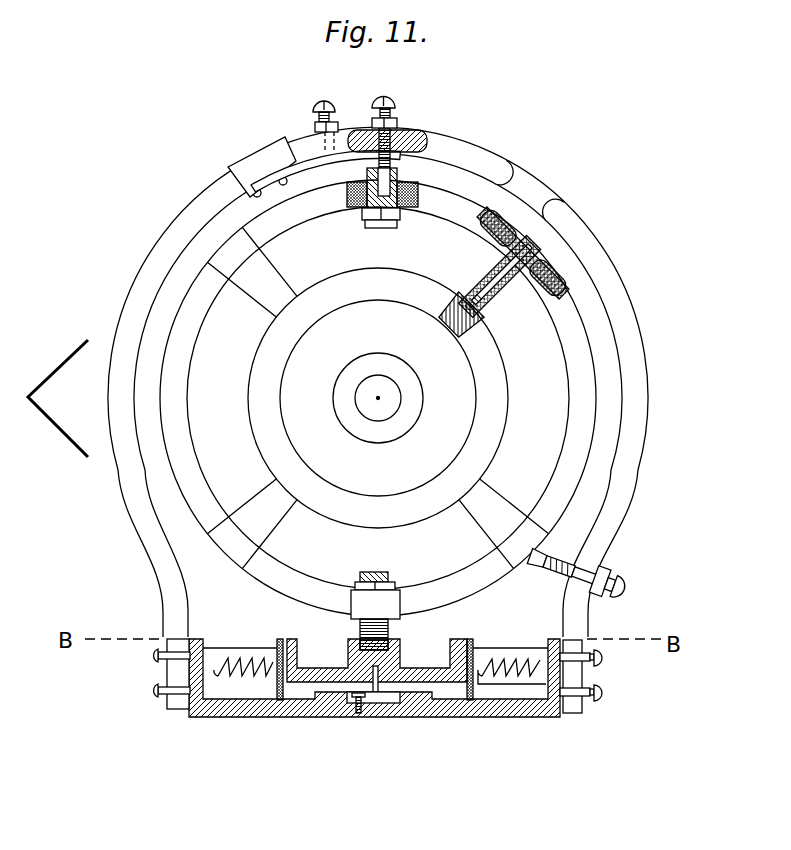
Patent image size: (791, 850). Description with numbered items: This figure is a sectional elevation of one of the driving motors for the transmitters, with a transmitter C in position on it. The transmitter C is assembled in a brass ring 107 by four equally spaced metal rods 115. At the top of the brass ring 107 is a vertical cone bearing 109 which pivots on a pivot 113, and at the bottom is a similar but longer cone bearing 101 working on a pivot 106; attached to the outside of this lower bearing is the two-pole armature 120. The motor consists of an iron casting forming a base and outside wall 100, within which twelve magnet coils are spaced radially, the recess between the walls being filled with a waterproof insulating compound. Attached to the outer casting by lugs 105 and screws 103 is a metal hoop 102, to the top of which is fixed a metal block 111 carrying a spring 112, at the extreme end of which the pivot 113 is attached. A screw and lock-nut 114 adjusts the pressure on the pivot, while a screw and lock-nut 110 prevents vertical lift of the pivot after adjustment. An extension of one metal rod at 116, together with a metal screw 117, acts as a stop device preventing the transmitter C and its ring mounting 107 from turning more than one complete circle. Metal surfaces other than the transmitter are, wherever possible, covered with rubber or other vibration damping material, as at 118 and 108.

The base and outside wall 100 is at (530, 717).
The cone bearing 101 is at (368, 683).
The metal hoop 102 is at (533, 180).
The screws 103 is at (605, 688).
The lugs 105 is at (584, 706).
The pivot 106 is at (376, 690).
The brass ring 107 is at (583, 320).
The vibration damping material 108 is at (556, 298).
The cone bearing 109 is at (397, 171).
The screw and lock-nut 110 is at (387, 96).
The metal block 111 is at (256, 152).
The spring 112 is at (305, 160).
The pivot 113 is at (400, 165).
The screw and lock-nut 114 is at (329, 99).
The metal rods 115 is at (533, 247).
The rod extension 116 is at (536, 558).
The metal screw 117 is at (621, 583).
The vibration damping material 118 is at (543, 253).
The two-pole armature 120 is at (447, 683).
The transmitter C is at (249, 418).